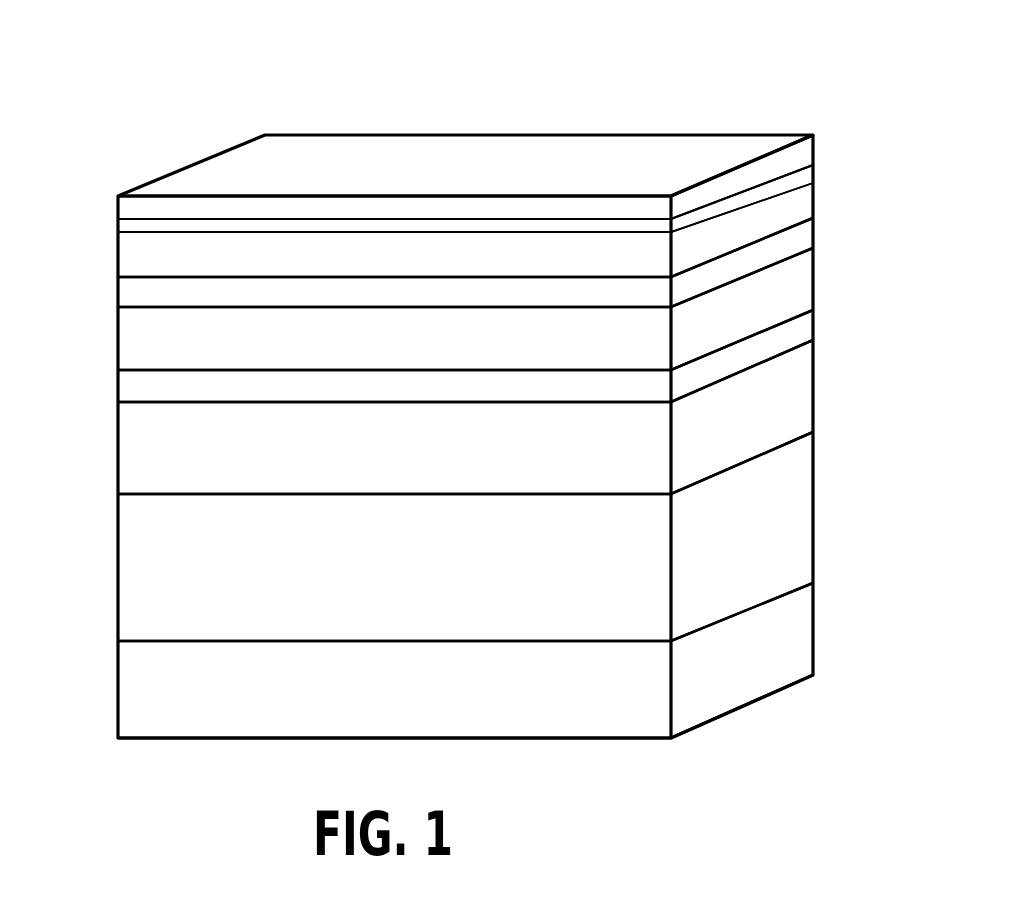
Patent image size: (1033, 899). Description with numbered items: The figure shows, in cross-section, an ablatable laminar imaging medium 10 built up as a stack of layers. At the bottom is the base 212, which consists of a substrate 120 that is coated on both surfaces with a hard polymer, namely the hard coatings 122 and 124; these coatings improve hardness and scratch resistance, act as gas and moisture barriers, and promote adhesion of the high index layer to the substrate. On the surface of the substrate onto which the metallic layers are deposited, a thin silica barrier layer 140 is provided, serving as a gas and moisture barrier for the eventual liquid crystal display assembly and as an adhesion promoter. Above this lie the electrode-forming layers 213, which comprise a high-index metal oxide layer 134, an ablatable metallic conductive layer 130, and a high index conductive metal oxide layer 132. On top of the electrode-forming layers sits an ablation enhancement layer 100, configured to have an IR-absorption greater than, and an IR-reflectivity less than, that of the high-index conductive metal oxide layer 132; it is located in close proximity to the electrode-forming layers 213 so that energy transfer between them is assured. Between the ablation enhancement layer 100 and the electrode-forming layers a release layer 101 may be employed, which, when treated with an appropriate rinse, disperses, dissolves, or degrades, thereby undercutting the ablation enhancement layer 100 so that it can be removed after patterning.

The ablatable laminar imaging medium 10 is at (834, 56).
The ablation enhancement layer 100 is at (800, 153).
The release layer 101 is at (815, 167).
The high index conductive metal oxide layer 132 is at (798, 199).
The ablatable metallic conductive layer 130 is at (805, 232).
The high-index metal oxide layer 134 is at (803, 285).
The barrier layer 140 is at (802, 328).
The hard coating 122 is at (800, 388).
The substrate 120 is at (795, 507).
The hard coating 124 is at (798, 630).
The electrode-forming layers 213 is at (108, 374).
The base 212 is at (108, 405).